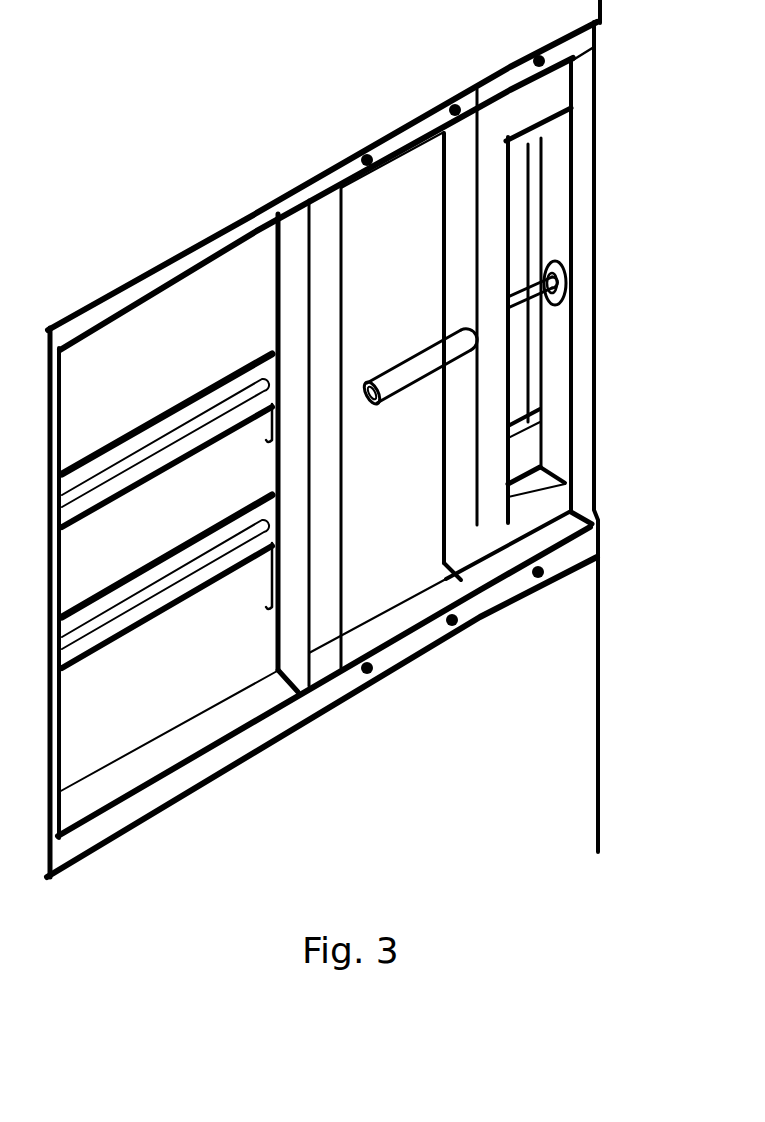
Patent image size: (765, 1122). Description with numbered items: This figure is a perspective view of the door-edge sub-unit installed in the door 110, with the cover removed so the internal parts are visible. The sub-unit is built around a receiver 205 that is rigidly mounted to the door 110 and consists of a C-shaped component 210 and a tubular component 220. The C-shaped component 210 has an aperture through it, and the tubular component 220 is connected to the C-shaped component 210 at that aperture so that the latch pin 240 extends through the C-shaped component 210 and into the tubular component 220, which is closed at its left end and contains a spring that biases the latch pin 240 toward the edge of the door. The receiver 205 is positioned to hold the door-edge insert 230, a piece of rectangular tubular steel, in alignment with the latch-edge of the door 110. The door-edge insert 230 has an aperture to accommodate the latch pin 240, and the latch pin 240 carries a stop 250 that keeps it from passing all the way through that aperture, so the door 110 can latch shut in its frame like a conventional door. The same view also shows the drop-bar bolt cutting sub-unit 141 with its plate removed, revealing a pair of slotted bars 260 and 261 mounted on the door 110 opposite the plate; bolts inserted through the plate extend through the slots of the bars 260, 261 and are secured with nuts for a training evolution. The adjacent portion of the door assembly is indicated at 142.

The door 110 is at (343, 40).
The drop-bar bolt cutting sub-unit 141 is at (322, 731).
The second section 142 is at (590, 575).
The receiver 205 is at (430, 516).
The C-shaped component 210 is at (447, 235).
The tubular component 220 is at (405, 358).
The door-edge insert 230 is at (591, 384).
The latch pin 240 is at (515, 276).
The stop 250 is at (556, 301).
The slotted bar 260 is at (166, 410).
The slotted bar 261 is at (171, 550).